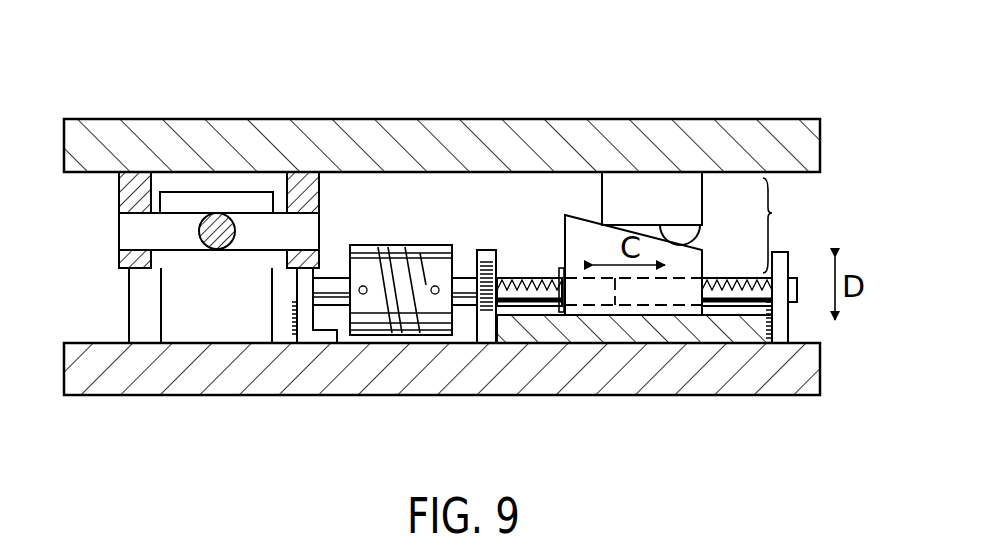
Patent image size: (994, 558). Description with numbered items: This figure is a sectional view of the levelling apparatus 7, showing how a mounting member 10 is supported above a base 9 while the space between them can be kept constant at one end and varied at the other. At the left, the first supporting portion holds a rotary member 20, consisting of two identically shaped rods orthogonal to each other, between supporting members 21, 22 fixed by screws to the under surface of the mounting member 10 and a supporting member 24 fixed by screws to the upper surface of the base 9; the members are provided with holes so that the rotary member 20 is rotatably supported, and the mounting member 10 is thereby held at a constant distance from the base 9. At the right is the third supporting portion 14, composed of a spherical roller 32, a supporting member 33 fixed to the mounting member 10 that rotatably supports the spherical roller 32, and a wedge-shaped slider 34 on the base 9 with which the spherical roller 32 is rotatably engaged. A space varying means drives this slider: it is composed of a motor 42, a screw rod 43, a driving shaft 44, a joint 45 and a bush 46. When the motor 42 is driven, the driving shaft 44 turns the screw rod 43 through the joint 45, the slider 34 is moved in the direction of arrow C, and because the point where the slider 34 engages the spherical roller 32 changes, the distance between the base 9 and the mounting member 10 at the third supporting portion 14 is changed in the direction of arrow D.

The positioning apparatus 7 is at (553, 103).
The base 9 is at (462, 396).
The mounting member 10 is at (393, 118).
The third supporting portion 14 is at (793, 225).
The rotary member 20 is at (119, 234).
The supporting member 21 is at (119, 203).
The supporting member 22 is at (319, 190).
The supporting member 24 is at (172, 302).
The spherical roller 32 is at (703, 228).
The supporting member 33 is at (703, 188).
The slider 34 is at (705, 265).
The motor 42 is at (152, 336).
The screw rod 43 is at (513, 273).
The driving shaft 44 is at (333, 273).
The joint 45 is at (428, 245).
The bush 46 is at (562, 287).